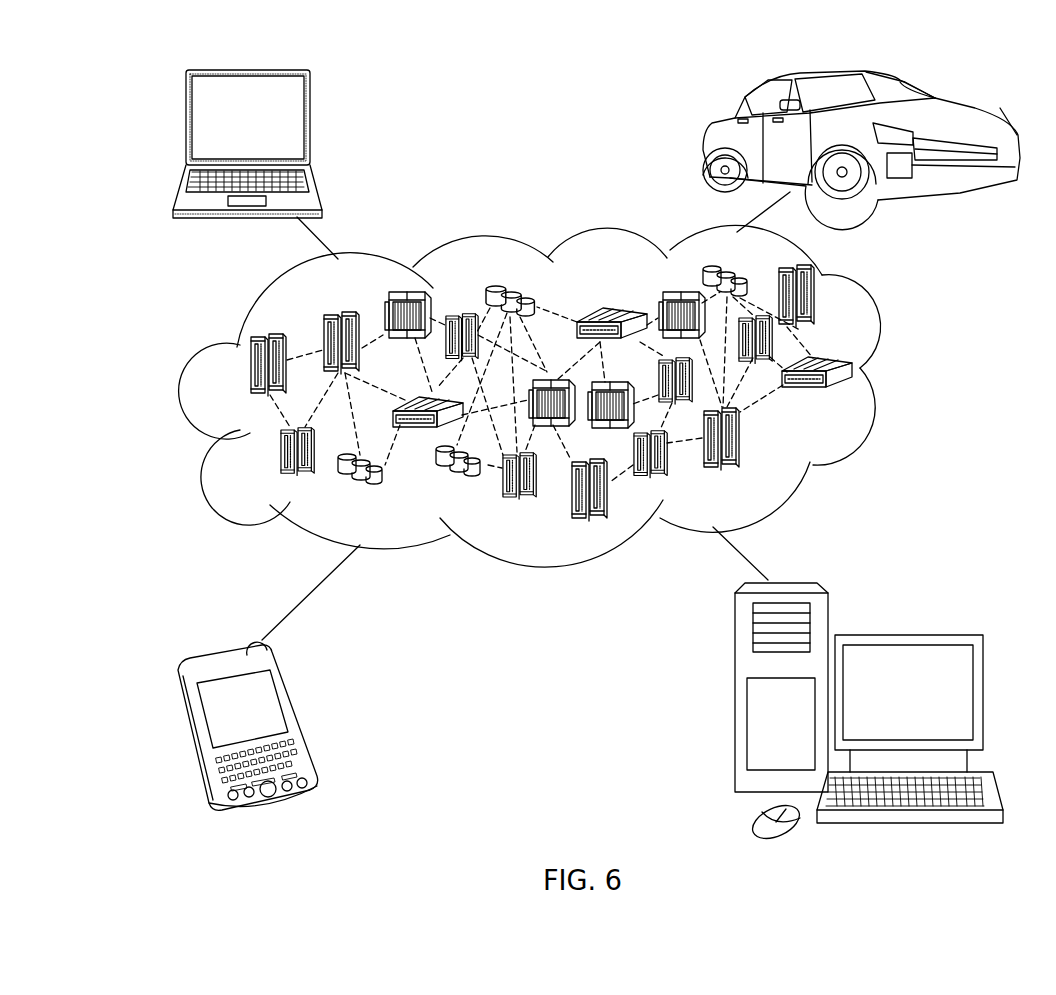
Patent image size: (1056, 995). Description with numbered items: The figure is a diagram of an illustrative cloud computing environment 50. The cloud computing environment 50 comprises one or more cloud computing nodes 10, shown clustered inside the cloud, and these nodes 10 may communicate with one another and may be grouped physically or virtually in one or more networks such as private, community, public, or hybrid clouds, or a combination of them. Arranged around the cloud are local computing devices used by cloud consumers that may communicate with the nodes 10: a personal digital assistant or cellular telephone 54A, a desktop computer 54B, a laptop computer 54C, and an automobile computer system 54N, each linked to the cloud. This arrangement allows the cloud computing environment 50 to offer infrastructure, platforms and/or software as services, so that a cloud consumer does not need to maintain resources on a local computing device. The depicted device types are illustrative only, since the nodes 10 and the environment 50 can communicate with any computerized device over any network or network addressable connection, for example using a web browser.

The cloud computing nodes 10 is at (858, 401).
The cloud computing environment 50 is at (905, 372).
The personal digital assistant (PDA) or cellular telephone 54A is at (300, 720).
The desktop computer 54B is at (907, 635).
The laptop computer 54C is at (312, 122).
The automobile computer system 54N is at (707, 143).